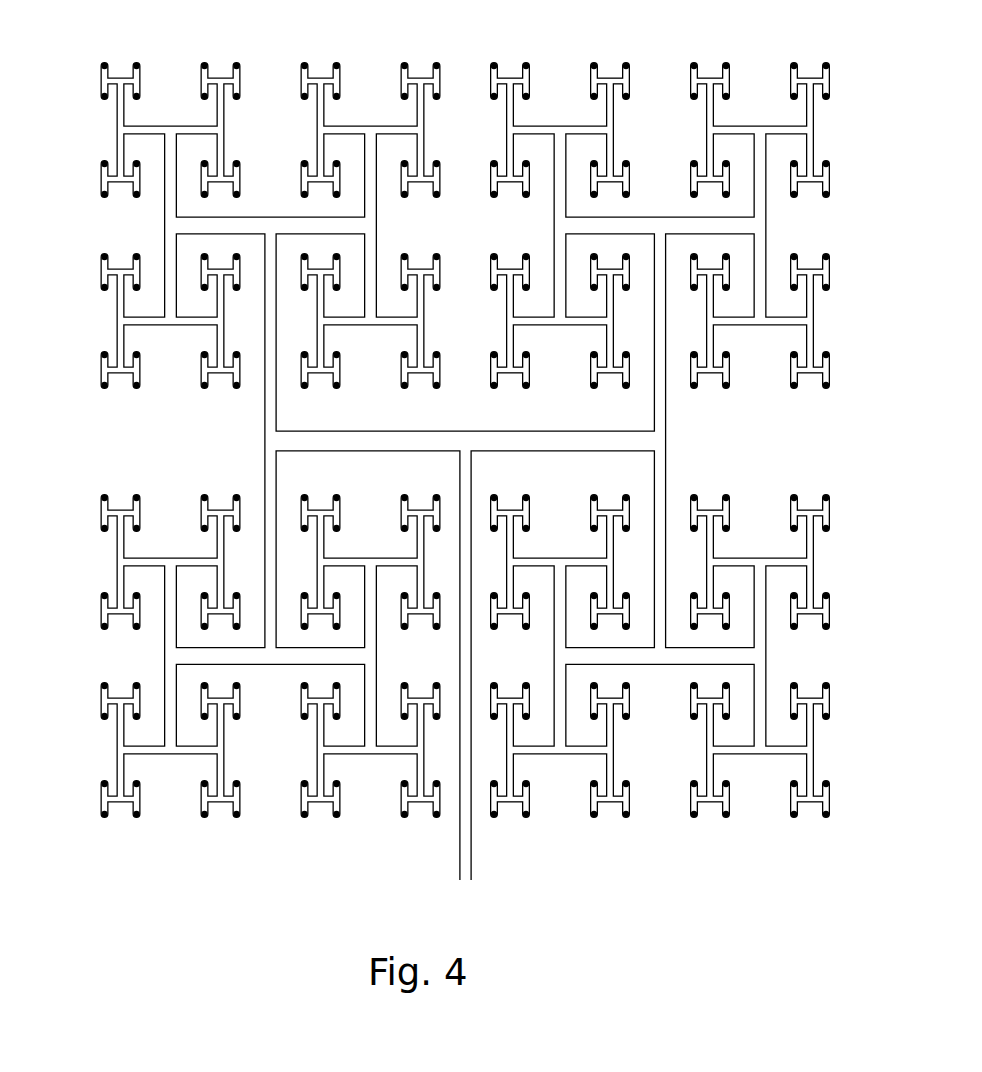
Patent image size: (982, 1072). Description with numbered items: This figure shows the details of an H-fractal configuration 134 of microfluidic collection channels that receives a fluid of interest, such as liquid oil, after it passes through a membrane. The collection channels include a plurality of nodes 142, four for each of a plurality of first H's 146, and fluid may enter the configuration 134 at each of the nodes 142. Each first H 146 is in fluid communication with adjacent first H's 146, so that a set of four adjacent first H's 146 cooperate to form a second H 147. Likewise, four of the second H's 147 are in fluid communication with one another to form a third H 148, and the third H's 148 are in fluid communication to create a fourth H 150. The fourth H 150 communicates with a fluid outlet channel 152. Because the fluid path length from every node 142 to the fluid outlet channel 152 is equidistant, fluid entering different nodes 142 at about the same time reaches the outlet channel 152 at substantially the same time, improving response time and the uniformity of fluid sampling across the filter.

The H-fractal configuration 134 is at (245, 905).
The node 142 is at (238, 64).
The first H 146 is at (94, 88).
The second H 147 is at (626, 136).
The third H 148 is at (146, 227).
The fourth H 150 is at (238, 446).
The fluid outlet channel 152 is at (457, 850).